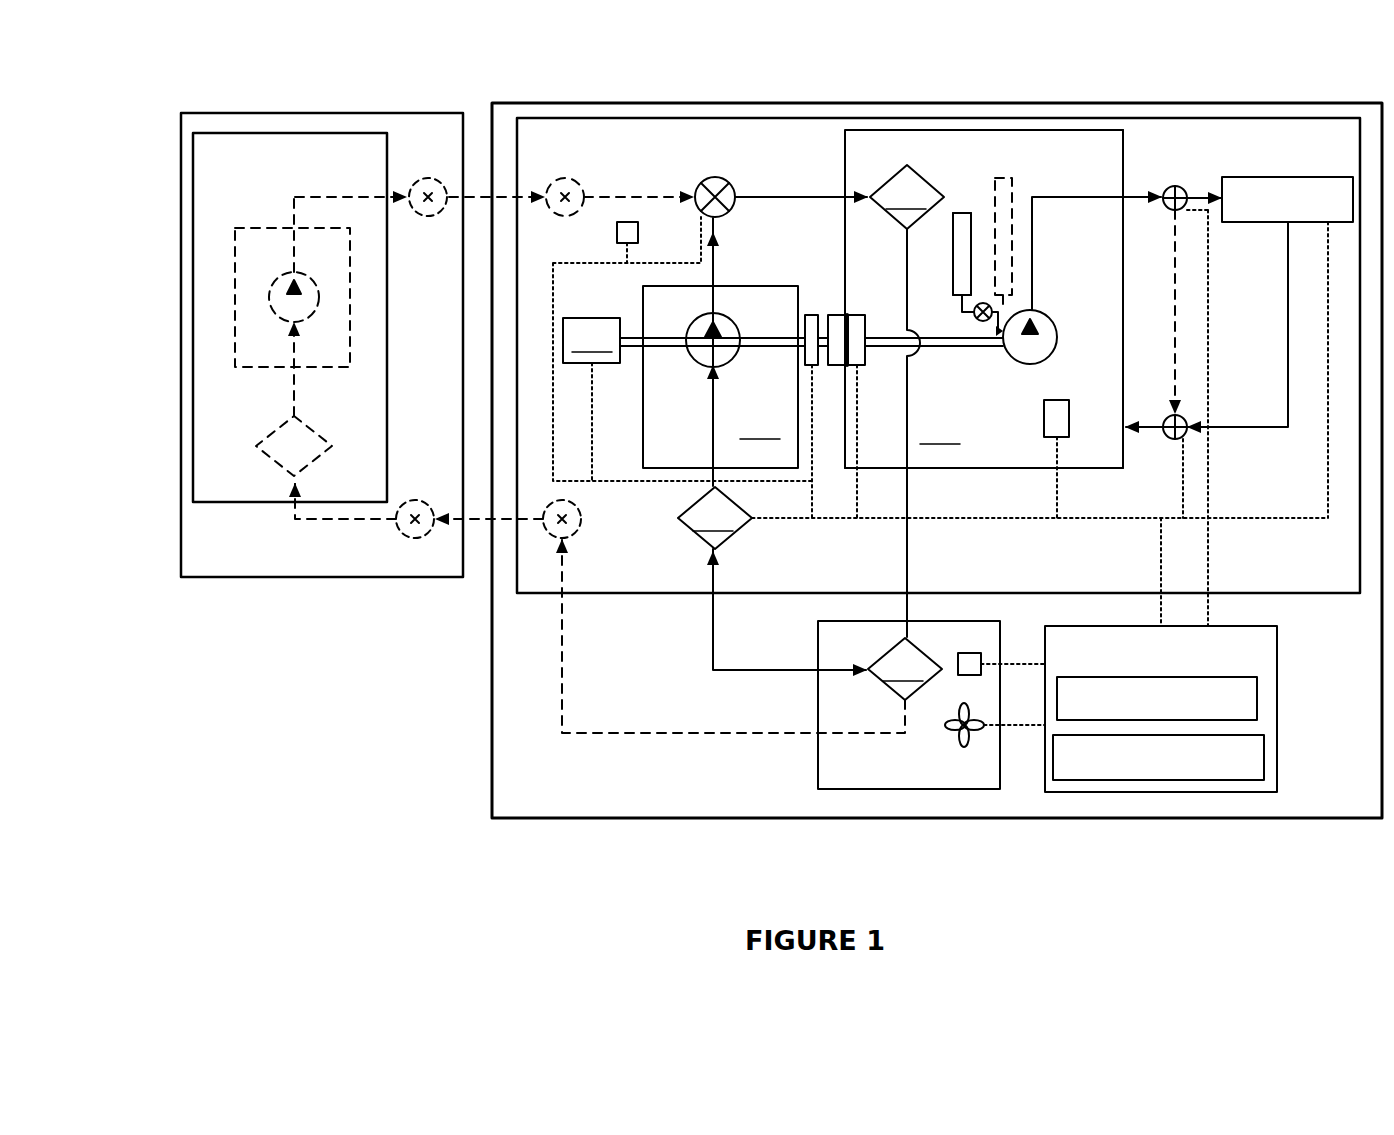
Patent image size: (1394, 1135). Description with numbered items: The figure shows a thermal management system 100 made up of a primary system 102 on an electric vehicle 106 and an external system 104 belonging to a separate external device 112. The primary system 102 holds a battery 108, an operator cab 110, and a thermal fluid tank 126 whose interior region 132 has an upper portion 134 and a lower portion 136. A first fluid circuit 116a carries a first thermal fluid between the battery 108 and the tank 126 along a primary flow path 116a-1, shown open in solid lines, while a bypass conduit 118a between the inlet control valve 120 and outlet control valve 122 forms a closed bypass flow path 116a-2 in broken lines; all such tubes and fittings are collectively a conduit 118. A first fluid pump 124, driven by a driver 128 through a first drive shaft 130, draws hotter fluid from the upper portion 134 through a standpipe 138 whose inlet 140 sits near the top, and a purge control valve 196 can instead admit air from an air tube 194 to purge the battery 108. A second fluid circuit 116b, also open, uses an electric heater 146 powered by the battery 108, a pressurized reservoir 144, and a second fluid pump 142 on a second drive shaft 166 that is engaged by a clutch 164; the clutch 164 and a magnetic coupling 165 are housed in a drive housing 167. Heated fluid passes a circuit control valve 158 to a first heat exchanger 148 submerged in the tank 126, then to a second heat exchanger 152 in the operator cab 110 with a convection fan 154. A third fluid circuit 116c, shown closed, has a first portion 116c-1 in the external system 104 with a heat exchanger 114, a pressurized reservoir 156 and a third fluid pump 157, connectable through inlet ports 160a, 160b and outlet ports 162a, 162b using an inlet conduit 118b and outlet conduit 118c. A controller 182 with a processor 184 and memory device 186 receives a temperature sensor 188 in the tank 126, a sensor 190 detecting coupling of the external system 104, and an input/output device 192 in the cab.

The thermal management system 100 is at (258, 758).
The primary system 102 is at (657, 118).
The external system 104 is at (378, 133).
The electric vehicle 106 is at (1210, 818).
The battery 108 is at (1290, 177).
The operator cab 110 is at (873, 790).
The external device 112 is at (300, 113).
The heat exchanger 114 is at (292, 482).
The first fluid circuit 116a is at (1222, 440).
The primary flow path 116a-1 is at (1203, 187).
The bypass flow path 116a-2 is at (1196, 301).
The second fluid circuit 116b is at (750, 538).
The third fluid circuit 116c is at (266, 394).
The first portion of the third fluid circuit 116c-1 is at (552, 578).
The conduit 118 is at (713, 652).
The bypass conduit 118a is at (1212, 327).
The inlet conduit 118b is at (472, 190).
The outlet conduit 118c is at (478, 535).
The inlet control valve 120 is at (1168, 438).
The outlet control valve 122 is at (1177, 186).
The first fluid pump 124 is at (1020, 365).
The thermal fluid tank 126 is at (941, 432).
The driver 128 is at (591, 340).
The first drive shaft 130 is at (933, 347).
The interior region 132 is at (1113, 160).
The upper portion 134 is at (875, 130).
The lower portion 136 is at (987, 468).
The standpipe 138 is at (962, 213).
The inlet 140 is at (962, 254).
The second fluid pump 142 is at (700, 362).
The pressurized reservoir 144 is at (720, 377).
The electric heater 146 is at (1003, 518).
The first heat exchanger 148 is at (839, 401).
The second heat exchanger 152 is at (905, 669).
The convection fan 154 is at (970, 737).
The pressurized reservoir 156 is at (235, 265).
The third fluid pump 157 is at (320, 307).
The circuit control valve 158 is at (735, 205).
The inlet port 160a is at (550, 180).
The inlet port 160b is at (415, 545).
The outlet port 162a is at (583, 531).
The outlet port 162b is at (428, 218).
The clutch 164 is at (810, 315).
The magnetic coupling 165 is at (857, 315).
The second drive shaft 166 is at (728, 325).
The drive housing 167 is at (827, 455).
The controller 182 is at (1280, 630).
The processor 184 is at (1257, 698).
The memory device 186 is at (1264, 752).
The temperature sensor 188 is at (1070, 420).
The sensor 190 is at (625, 219).
The input/output device 192 is at (970, 653).
The air tube 194 is at (1017, 190).
The purge control valve 196 is at (985, 303).